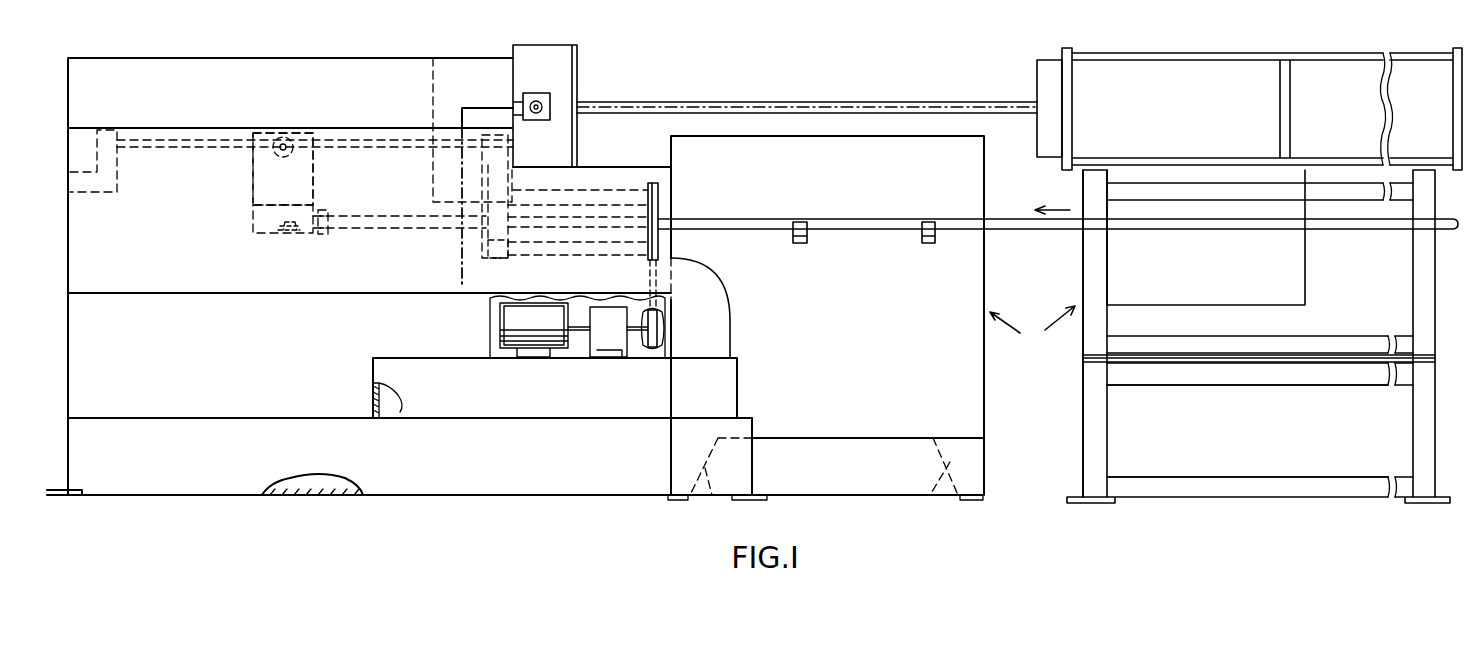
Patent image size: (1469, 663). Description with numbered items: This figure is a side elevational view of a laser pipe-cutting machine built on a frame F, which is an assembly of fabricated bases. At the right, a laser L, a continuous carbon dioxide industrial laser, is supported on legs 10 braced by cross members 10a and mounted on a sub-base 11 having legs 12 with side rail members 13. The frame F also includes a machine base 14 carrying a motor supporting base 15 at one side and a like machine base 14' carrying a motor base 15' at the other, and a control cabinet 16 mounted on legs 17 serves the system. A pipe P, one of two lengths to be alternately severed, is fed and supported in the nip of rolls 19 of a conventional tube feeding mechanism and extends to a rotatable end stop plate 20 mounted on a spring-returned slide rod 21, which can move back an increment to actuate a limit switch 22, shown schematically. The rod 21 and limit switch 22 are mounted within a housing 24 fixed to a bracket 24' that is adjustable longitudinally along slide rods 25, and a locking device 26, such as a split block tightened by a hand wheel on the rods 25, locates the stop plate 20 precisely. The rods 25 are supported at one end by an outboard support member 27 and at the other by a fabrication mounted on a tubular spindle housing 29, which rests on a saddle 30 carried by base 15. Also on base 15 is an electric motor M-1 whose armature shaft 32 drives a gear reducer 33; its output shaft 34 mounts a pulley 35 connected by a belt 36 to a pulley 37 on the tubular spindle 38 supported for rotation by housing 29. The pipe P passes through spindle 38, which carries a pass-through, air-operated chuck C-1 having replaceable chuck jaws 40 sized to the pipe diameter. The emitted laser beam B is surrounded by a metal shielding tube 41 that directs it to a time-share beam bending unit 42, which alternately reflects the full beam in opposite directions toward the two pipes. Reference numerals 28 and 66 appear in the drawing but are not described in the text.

The legs 10 is at (1418, 254).
The cross members 10a is at (1345, 191).
The sub-base 11 is at (1071, 421).
The legs 12 is at (1100, 432).
The side rail members 13 is at (1247, 483).
The machine base 14 is at (410, 456).
The machine base 14' is at (305, 505).
The motor supporting base 15 is at (577, 388).
The motor base 15' is at (357, 399).
The control cabinet 16 is at (871, 352).
The legs 17 is at (930, 495).
The rolls 19 is at (922, 238).
The end stop plate 20 is at (323, 234).
The slide rod 21 is at (323, 212).
The limit switch 22 is at (283, 228).
The housing 24 is at (260, 183).
The bracket 24' is at (251, 169).
The slide rods 25 is at (236, 140).
The locking device 26 is at (283, 155).
The outboard support member 27 is at (120, 172).
The slide 28 is at (490, 135).
The tubular spindle housing 29 is at (620, 202).
The saddle 30 is at (505, 283).
The armature shaft 32 is at (545, 345).
The gear reducer 33 is at (598, 334).
The output shaft 34 is at (640, 340).
The pulley 35 is at (660, 338).
The belt 36 is at (662, 306).
The pulley 37 is at (660, 206).
The spindle 38 is at (594, 186).
The chuck jaws 40 is at (478, 242).
The metal shielding tube 41 is at (920, 102).
The time-share beam bending unit 42 is at (594, 65).
The cover 66 is at (432, 100).
The laser beam B is at (977, 105).
The chuck C-1 is at (462, 231).
The frame F is at (1032, 329).
The laser L is at (1326, 50).
The electric motor M-1 is at (580, 333).
The pipe P is at (1003, 219).